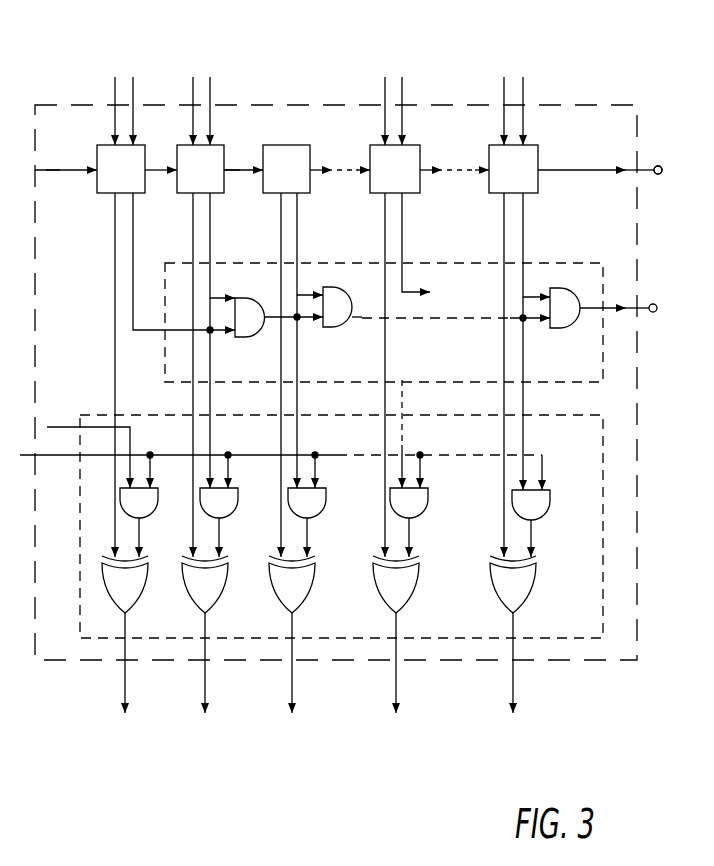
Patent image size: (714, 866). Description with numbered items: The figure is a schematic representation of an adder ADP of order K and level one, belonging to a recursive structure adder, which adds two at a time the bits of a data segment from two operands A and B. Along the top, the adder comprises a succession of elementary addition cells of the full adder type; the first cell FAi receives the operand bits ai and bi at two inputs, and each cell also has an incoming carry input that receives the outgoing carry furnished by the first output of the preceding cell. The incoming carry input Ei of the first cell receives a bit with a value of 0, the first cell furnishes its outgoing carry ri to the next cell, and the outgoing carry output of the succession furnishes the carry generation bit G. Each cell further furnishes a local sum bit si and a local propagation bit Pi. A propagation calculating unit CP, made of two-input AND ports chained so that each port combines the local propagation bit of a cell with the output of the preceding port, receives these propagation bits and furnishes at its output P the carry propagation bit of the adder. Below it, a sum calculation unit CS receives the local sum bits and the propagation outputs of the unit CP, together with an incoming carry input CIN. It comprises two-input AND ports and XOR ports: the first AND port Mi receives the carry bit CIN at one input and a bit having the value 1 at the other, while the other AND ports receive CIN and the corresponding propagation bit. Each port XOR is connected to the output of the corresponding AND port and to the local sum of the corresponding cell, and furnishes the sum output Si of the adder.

The operand A bit ai is at (115, 80).
The operand B bit bi is at (133, 97).
The elementary addition cell FAi is at (121, 169).
The incoming carry input Ei is at (92, 170).
The zero carry bit 0 is at (47, 160).
The outgoing carry bit ri is at (146, 166).
The carry generation bit G is at (657, 166).
The local sum bit si is at (115, 208).
The propagation bit Pi is at (133, 236).
The carry propagation output P is at (655, 304).
The propagation calculating unit CP is at (605, 344).
The sum calculation unit CS is at (637, 463).
The incoming carry input CIN is at (38, 456).
The one-valued bit 1 is at (84, 446).
The first AND port of sum unit Mi is at (140, 497).
The XOR port XOR is at (124, 594).
The sum output Si is at (115, 683).
The adder ADP is at (605, 741).